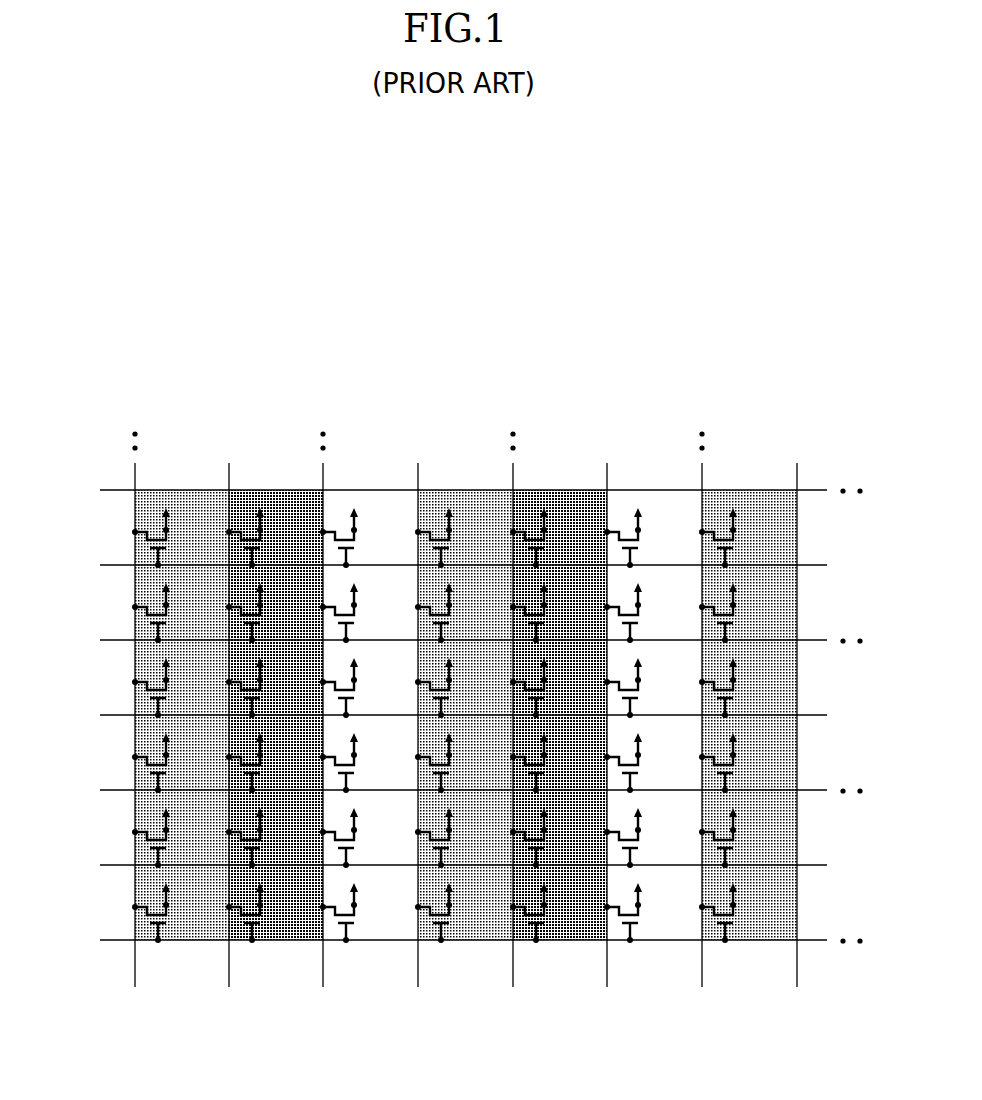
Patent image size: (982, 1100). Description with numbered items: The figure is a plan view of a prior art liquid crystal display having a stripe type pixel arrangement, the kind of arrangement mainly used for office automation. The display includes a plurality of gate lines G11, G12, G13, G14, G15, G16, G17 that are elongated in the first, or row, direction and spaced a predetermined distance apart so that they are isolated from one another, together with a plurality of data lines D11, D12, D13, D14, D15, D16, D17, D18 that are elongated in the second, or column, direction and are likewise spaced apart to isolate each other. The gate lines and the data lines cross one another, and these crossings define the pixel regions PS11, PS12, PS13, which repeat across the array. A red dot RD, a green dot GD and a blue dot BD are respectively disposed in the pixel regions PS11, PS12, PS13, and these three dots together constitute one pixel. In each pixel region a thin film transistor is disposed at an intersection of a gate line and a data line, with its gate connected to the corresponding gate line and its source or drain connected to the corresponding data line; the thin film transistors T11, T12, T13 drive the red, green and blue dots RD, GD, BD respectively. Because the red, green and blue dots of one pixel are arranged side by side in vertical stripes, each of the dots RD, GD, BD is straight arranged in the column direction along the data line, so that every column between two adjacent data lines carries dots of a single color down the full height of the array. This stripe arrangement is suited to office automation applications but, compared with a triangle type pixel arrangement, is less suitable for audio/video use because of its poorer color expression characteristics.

The gate line G11 is at (436, 941).
The gate line G12 is at (436, 866).
The gate line G13 is at (436, 791).
The gate line G14 is at (436, 716).
The gate line G15 is at (436, 641).
The gate line G16 is at (436, 566).
The gate line G17 is at (436, 491).
The data line D11 is at (135, 748).
The data line D12 is at (229, 748).
The data line D13 is at (323, 748).
The data line D14 is at (420, 748).
The data line D15 is at (513, 748).
The data line D16 is at (609, 748).
The data line D17 is at (703, 748).
The data line D18 is at (799, 748).
The pixel region PS11 is at (186, 500).
The pixel region PS12 is at (278, 500).
The pixel region PS13 is at (371, 500).
The thin film transistor T11 is at (434, 725).
The thin film transistor T12 is at (413, 725).
The thin film transistor T13 is at (507, 725).
The red dot RD is at (192, 930).
The green dot GD is at (287, 930).
The blue dot BD is at (380, 928).